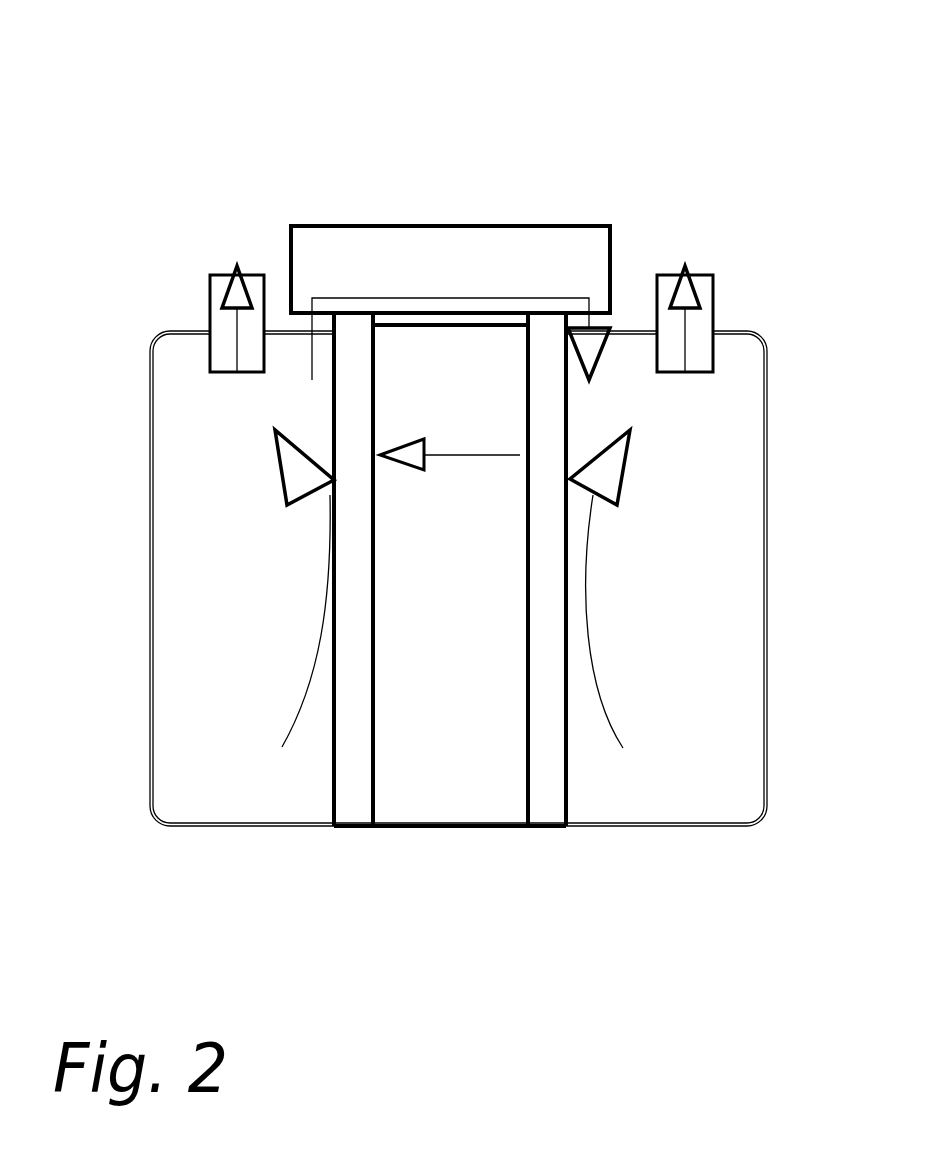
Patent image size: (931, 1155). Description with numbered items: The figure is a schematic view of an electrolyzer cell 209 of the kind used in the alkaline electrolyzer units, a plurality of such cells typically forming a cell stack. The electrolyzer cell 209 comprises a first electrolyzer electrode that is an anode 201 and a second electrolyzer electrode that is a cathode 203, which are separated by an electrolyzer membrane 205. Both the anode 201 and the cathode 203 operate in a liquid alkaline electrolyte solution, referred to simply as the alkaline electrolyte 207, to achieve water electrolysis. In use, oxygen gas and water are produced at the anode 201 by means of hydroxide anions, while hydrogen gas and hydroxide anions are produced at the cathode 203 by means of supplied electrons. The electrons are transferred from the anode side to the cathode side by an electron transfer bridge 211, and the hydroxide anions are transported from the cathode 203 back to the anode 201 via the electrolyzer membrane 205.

The anode 201 is at (354, 812).
The cathode 203 is at (545, 812).
The electrolyzer membrane 205 is at (454, 790).
The alkaline electrolyte 207 is at (227, 803).
The electrolyzer cell 209 is at (175, 133).
The electron transfer bridge 211 is at (358, 227).